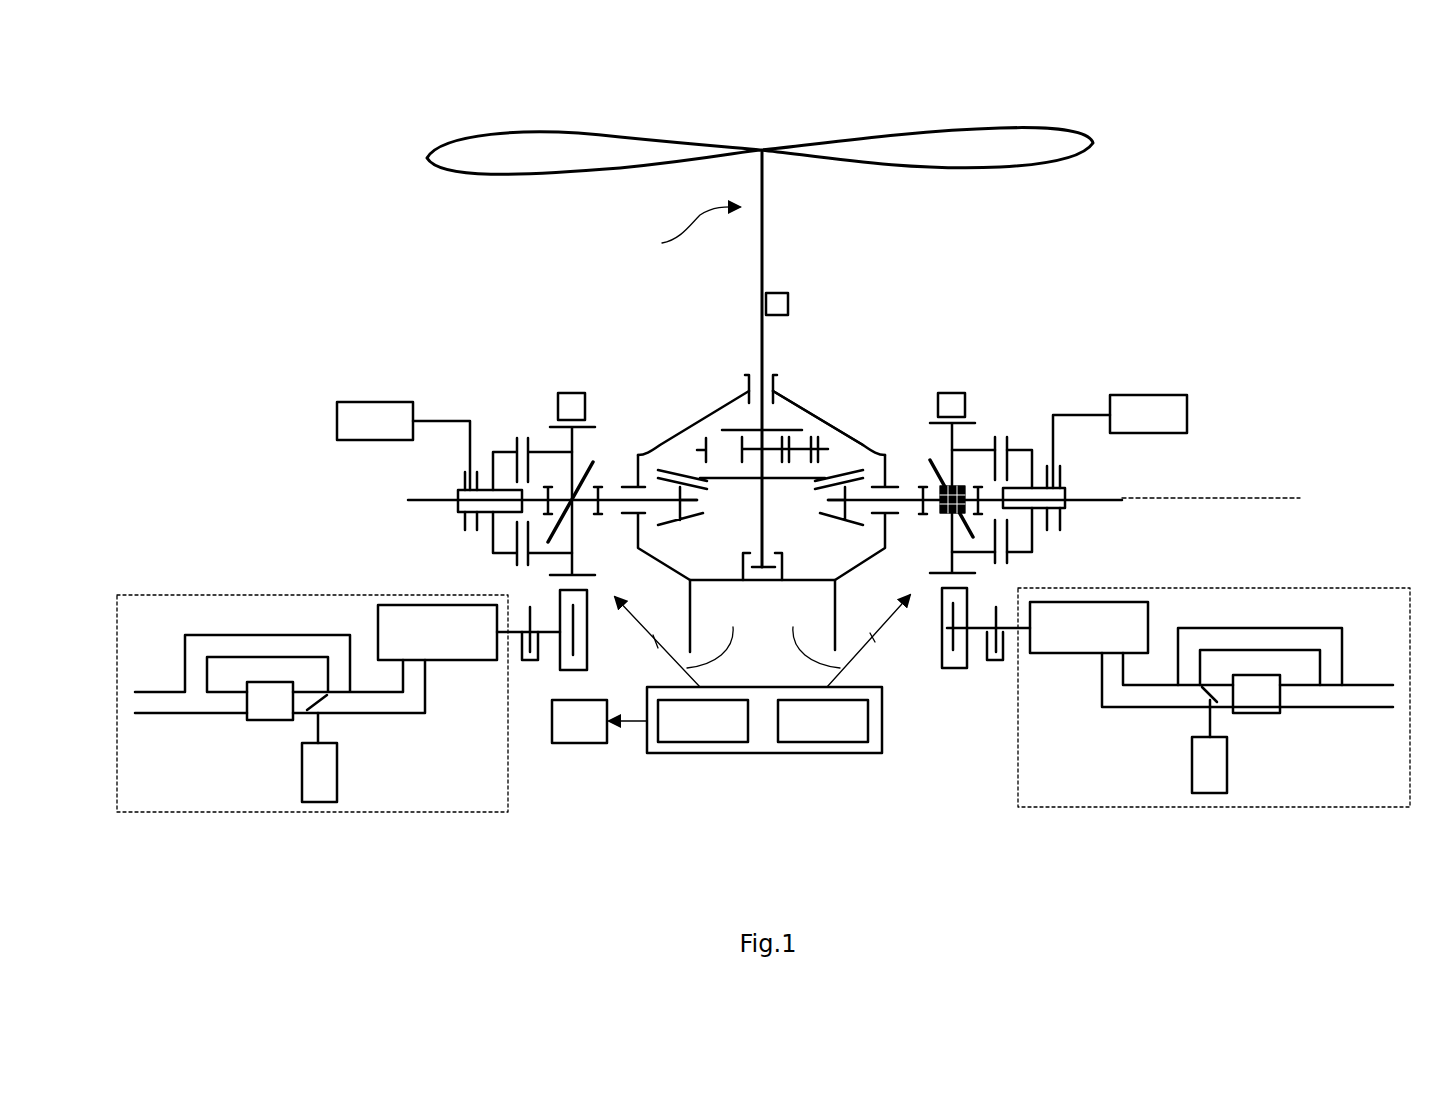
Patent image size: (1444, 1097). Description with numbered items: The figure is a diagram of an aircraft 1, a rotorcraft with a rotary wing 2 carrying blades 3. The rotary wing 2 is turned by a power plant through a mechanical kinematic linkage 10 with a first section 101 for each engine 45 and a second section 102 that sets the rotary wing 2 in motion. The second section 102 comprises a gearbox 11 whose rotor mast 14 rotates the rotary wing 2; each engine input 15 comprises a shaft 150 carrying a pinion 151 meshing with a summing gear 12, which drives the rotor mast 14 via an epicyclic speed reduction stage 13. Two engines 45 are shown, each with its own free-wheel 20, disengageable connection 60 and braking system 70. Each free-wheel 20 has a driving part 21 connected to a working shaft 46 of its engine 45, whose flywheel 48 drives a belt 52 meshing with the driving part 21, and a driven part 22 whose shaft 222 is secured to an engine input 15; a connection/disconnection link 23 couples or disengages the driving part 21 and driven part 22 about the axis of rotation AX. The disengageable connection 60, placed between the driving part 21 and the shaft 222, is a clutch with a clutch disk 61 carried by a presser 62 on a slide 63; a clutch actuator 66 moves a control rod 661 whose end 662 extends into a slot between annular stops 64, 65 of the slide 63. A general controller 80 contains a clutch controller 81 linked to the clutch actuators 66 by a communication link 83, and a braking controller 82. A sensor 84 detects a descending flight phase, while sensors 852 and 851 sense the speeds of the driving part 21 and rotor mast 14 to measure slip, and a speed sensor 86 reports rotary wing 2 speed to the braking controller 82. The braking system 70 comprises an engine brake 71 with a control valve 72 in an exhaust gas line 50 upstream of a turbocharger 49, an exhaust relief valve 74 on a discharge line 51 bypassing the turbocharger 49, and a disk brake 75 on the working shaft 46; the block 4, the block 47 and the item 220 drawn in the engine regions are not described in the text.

The aircraft 1 is at (1292, 258).
The rotary wing 2 is at (1063, 90).
The blades 3 is at (1095, 140).
The electrical power unit 4 is at (1315, 557).
The mechanical kinematic linkage 10 is at (875, 340).
The gearbox 11 is at (722, 402).
The summing gear 12 is at (778, 483).
The epicyclic speed reduction stage 13 is at (688, 438).
The rotor mast 14 is at (760, 248).
The engine input 15 is at (830, 383).
The shaft 150 is at (818, 418).
The pinion 151 is at (853, 515).
The free-wheel 20 is at (613, 463).
The driving part 21 is at (952, 440).
The driven part 22 is at (983, 396).
The shaft 222 is at (966, 490).
The connection/disconnection link 23 is at (918, 468).
The engine 45 is at (168, 812).
The working shaft 46 is at (1028, 655).
The electric motor controller 47 is at (1089, 627).
The flywheel 48 is at (948, 643).
The turbocharger 49 is at (1255, 713).
The exhaust gas line 50 is at (1123, 708).
The discharge line 51 is at (1325, 628).
The belt 52 is at (940, 628).
The disengageable connection 60 is at (480, 398).
The clutch disk 61 is at (1027, 440).
The presser 62 is at (1032, 465).
The slide 63 is at (1066, 507).
The annular stop 64 is at (1043, 510).
The annular stop 65 is at (1048, 530).
The clutch actuator 66 is at (364, 402).
The control rod 661 is at (1090, 415).
The end 662 is at (1063, 480).
The braking system 70 is at (1185, 788).
The engine brake 71 is at (1188, 695).
The control valve 72 is at (1160, 683).
The exhaust relief valve 74 is at (1188, 683).
The disk brake 75 is at (996, 660).
The general controller 80 is at (768, 753).
The clutch controller 81 is at (703, 721).
The braking controller 82 is at (823, 721).
The communication link 83 is at (763, 631).
The sensor 84 is at (599, 721).
The speed sensor 86 is at (837, 280).
The sensor 851 is at (788, 304).
The sensor 852 is at (950, 393).
The first section 101 is at (614, 550).
The second section 102 is at (678, 232).
The clutch plates 220 is at (1005, 440).
The axis of rotation AX is at (1272, 498).